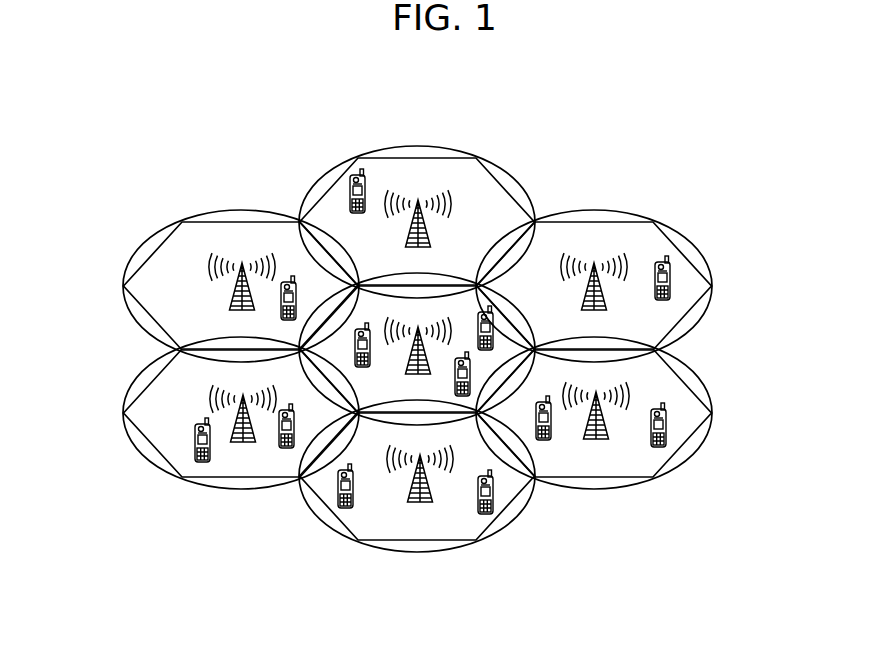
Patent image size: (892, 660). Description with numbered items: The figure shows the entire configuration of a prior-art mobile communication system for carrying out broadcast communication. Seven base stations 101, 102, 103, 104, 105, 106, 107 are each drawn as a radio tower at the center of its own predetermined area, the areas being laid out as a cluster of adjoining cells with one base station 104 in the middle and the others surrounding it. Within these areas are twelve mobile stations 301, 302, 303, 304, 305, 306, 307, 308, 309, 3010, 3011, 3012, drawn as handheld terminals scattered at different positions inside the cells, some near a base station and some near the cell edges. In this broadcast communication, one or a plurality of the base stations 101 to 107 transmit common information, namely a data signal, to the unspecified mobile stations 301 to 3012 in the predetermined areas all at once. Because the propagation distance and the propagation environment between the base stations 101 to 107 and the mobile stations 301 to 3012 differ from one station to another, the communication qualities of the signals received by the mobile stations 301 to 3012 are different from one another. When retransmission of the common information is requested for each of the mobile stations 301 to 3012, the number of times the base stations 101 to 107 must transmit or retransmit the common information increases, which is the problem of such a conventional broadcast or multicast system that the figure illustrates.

The base station 101 is at (418, 200).
The base station 102 is at (242, 263).
The base station 103 is at (594, 263).
The base station 104 is at (410, 367).
The base station 105 is at (243, 441).
The base station 106 is at (612, 428).
The base station 107 is at (431, 490).
The mobile station 301 is at (359, 170).
The mobile station 302 is at (289, 280).
The mobile station 303 is at (362, 368).
The mobile station 304 is at (463, 355).
The mobile station 305 is at (486, 311).
The mobile station 306 is at (666, 260).
The mobile station 307 is at (201, 464).
The mobile station 308 is at (285, 451).
The mobile station 309 is at (347, 511).
The mobile station 3010 is at (494, 503).
The mobile station 3011 is at (553, 426).
The mobile station 3012 is at (667, 434).